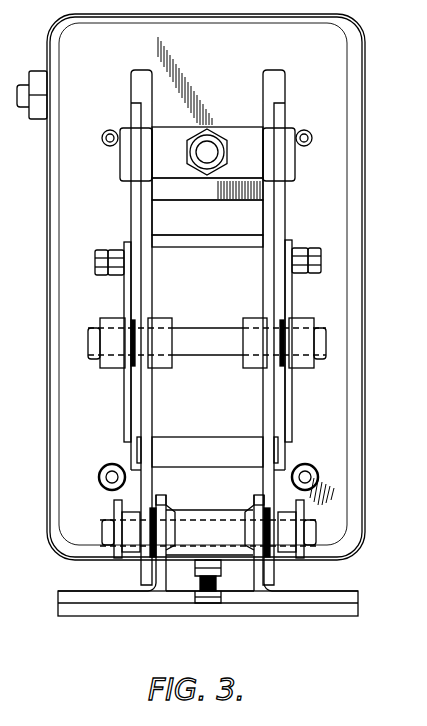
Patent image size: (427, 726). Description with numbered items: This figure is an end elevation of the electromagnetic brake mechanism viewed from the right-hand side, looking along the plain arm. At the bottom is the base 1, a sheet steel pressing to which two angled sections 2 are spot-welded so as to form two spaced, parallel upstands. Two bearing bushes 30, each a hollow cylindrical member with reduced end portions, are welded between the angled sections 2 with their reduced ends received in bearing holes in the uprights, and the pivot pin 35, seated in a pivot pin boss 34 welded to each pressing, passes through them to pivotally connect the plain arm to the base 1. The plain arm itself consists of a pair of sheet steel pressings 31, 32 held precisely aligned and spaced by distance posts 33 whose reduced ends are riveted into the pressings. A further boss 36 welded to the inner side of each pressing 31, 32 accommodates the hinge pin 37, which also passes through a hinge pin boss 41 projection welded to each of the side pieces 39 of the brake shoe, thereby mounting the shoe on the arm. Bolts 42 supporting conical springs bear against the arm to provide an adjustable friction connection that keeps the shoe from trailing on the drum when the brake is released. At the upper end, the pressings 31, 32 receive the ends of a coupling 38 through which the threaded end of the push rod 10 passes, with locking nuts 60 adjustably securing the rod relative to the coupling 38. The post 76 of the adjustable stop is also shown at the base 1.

The base 1 is at (280, 600).
The angled sections 2 is at (122, 598).
The push rod 10 is at (225, 133).
The bearing bushes 30 is at (208, 520).
The pressing 31 is at (145, 408).
The pressing 32 is at (273, 405).
The distance posts 33 is at (255, 216).
The pivot pin boss 34 is at (135, 530).
The pivot pin 35 is at (106, 542).
The boss 36 is at (158, 370).
The hinge pin 37 is at (208, 342).
The coupling 38 is at (196, 130).
The side pieces 39 is at (128, 300).
The hinge pin boss 41 is at (110, 370).
The bolts 42 is at (97, 262).
The locking nuts 60 is at (225, 154).
The post 76 is at (222, 580).